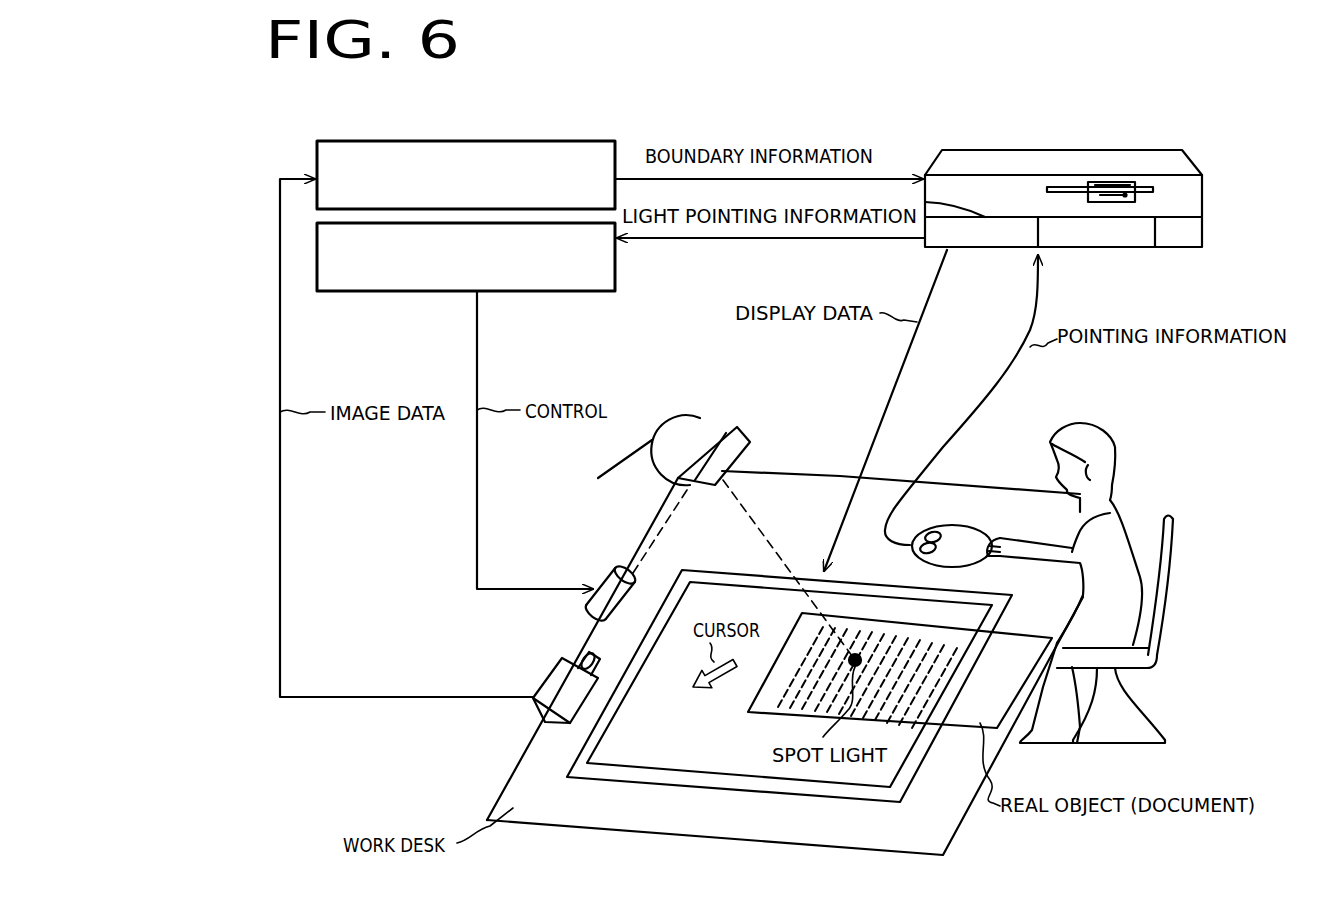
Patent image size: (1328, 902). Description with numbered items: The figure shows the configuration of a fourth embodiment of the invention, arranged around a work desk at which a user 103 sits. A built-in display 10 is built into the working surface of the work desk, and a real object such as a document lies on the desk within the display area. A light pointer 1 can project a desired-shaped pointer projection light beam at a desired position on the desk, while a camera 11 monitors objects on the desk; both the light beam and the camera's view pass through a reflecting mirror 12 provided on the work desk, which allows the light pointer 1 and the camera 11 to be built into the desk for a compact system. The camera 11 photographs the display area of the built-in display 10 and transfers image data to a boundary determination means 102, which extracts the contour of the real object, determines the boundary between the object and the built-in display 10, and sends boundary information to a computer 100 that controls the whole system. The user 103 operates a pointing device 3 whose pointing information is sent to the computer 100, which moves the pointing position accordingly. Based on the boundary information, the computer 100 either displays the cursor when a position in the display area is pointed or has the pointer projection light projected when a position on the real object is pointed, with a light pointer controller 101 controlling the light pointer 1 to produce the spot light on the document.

The boundary determination means 102 is at (600, 140).
The light pointer controller 101 is at (588, 293).
The computer 100 is at (1072, 163).
The reflecting mirror 12 is at (718, 432).
The pointing device 3 is at (965, 535).
The user 103 is at (1118, 445).
The light pointer 1 is at (590, 610).
The camera 11 is at (535, 700).
The built-in display 10 is at (647, 752).